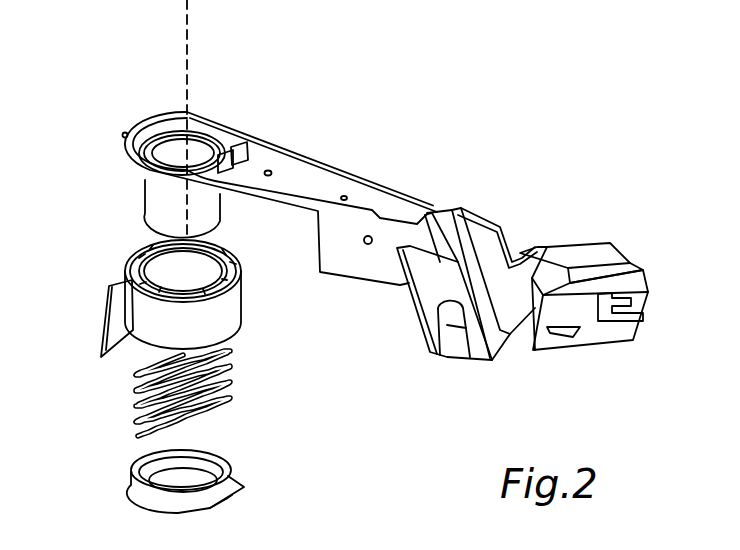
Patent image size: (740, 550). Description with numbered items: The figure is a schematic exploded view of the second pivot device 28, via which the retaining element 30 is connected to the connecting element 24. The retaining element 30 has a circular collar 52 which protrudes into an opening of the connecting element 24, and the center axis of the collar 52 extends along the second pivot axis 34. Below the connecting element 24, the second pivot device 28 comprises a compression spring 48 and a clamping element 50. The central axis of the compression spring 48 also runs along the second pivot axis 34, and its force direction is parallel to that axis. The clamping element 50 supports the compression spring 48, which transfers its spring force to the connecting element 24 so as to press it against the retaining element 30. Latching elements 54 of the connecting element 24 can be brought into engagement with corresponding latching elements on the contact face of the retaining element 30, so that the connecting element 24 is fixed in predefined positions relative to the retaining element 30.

The second pivot device 28 is at (114, 73).
The second pivot axis 34 is at (189, 41).
The retaining element 30 is at (324, 183).
The circular collar 52 is at (152, 200).
The latching elements 54 is at (193, 241).
The connecting element 24 is at (231, 311).
The compression spring 48 is at (233, 387).
The clamping element 50 is at (241, 480).